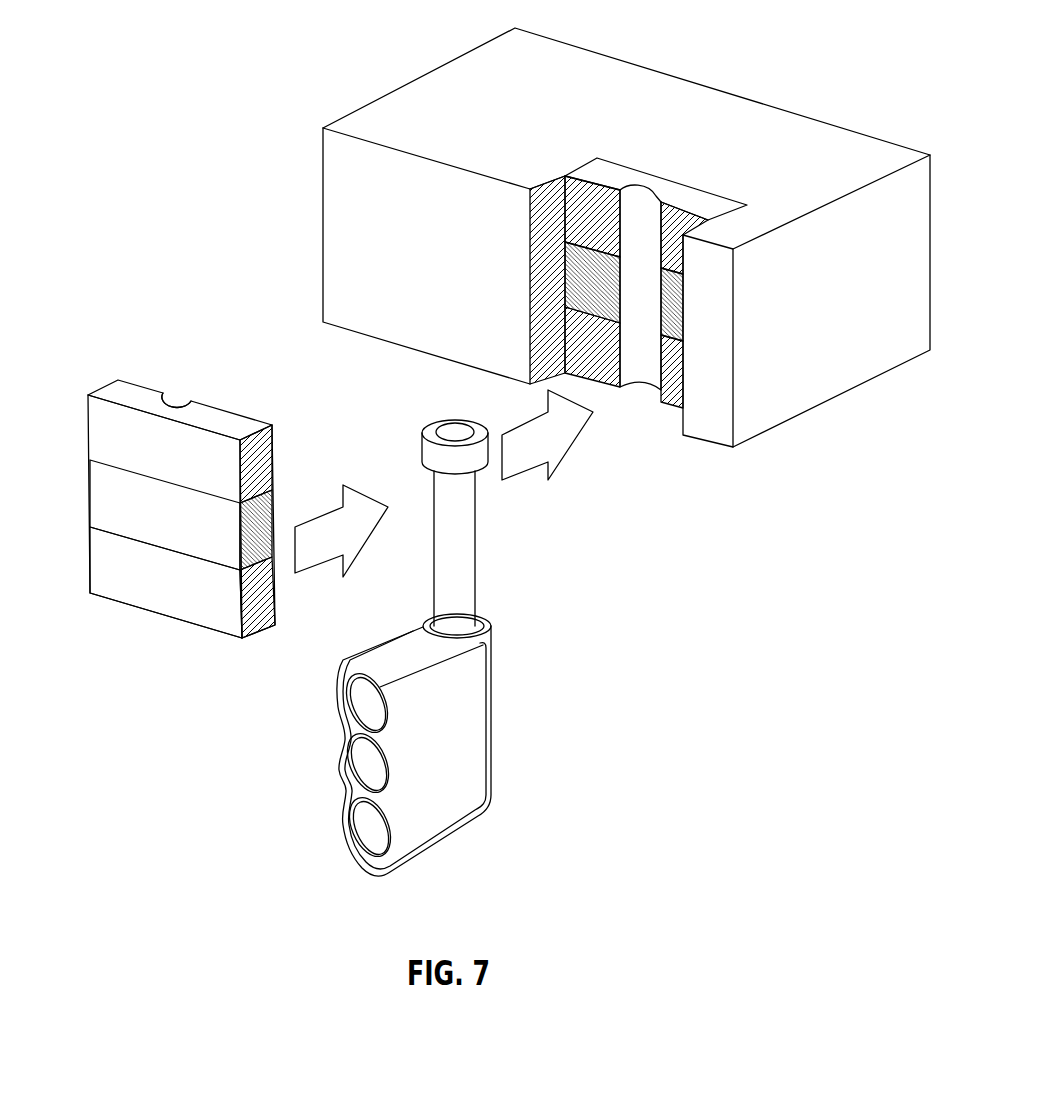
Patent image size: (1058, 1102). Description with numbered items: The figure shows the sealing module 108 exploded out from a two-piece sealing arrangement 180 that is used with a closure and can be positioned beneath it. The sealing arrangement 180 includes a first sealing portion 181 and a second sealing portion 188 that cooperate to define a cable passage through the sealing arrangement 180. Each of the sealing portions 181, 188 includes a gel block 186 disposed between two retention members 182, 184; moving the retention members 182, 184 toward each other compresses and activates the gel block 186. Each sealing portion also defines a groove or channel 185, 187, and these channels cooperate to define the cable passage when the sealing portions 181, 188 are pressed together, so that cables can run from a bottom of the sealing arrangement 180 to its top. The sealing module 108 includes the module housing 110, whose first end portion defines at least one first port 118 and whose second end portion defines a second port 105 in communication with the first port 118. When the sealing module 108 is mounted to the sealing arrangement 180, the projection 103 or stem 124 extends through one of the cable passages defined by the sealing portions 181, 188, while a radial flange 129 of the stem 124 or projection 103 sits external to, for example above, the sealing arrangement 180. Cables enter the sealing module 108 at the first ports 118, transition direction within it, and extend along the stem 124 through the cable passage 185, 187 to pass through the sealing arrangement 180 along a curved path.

The sealing arrangement 180 is at (724, 88).
The first sealing portion 181 is at (617, 180).
The retention member 182 is at (723, 207).
The retention member 184 is at (597, 343).
The groove or channel 185 is at (663, 198).
The gel block 186 is at (582, 263).
The groove or channel 187 is at (190, 405).
The second sealing portion 188 is at (98, 378).
The second port 105 is at (450, 424).
The radial flange 129 is at (420, 447).
The projection 103 is at (386, 548).
The stem 124 is at (433, 580).
The module housing 110 is at (478, 693).
The sealing module 108 is at (445, 647).
The first port 118 is at (378, 837).